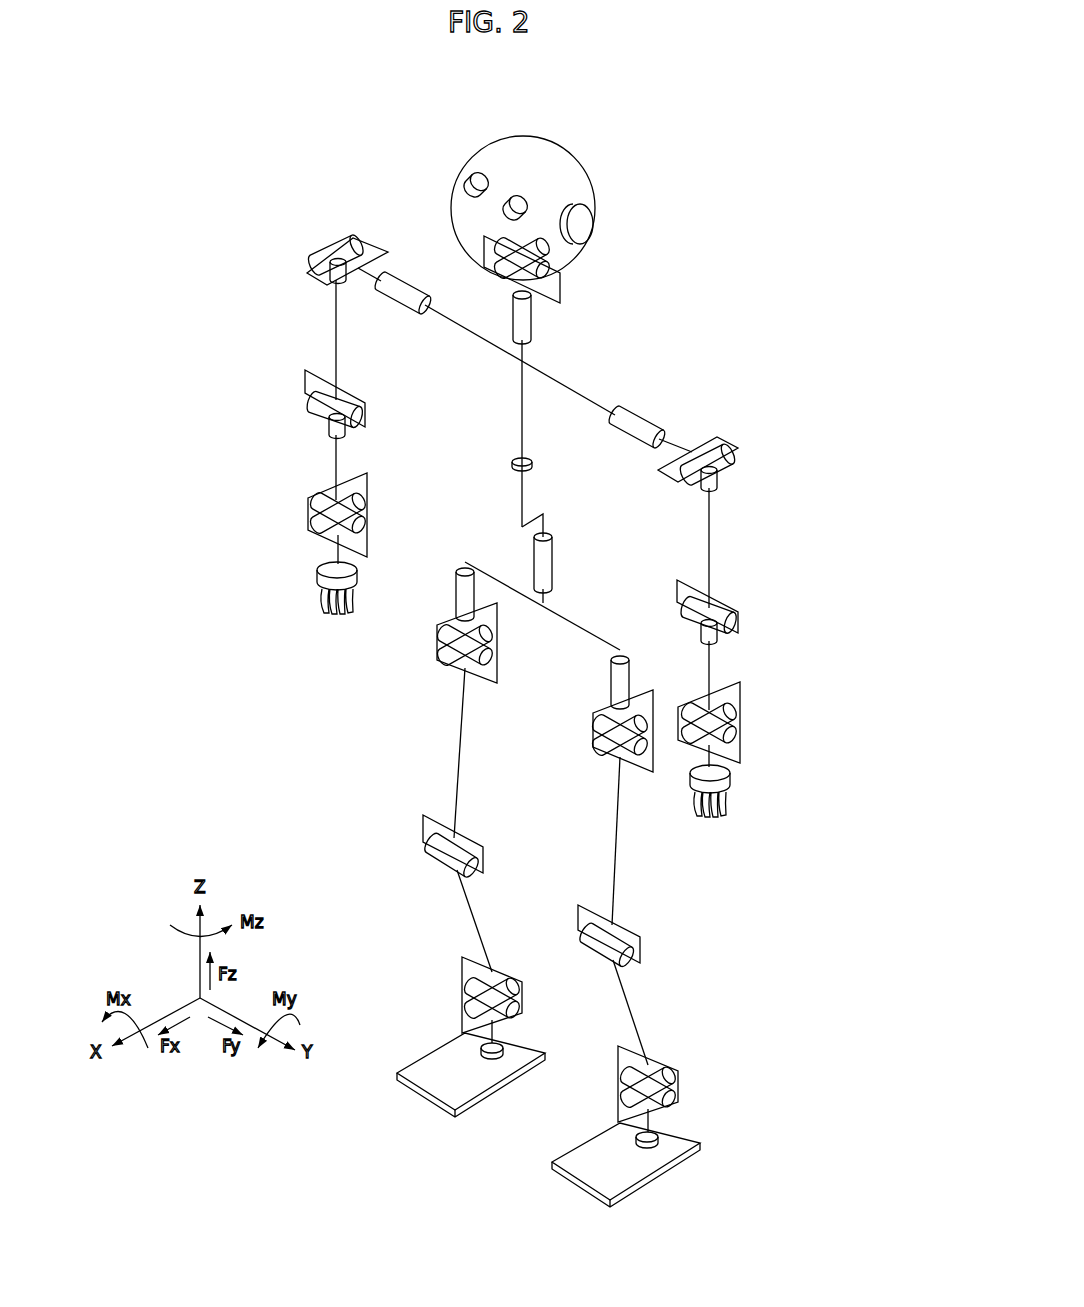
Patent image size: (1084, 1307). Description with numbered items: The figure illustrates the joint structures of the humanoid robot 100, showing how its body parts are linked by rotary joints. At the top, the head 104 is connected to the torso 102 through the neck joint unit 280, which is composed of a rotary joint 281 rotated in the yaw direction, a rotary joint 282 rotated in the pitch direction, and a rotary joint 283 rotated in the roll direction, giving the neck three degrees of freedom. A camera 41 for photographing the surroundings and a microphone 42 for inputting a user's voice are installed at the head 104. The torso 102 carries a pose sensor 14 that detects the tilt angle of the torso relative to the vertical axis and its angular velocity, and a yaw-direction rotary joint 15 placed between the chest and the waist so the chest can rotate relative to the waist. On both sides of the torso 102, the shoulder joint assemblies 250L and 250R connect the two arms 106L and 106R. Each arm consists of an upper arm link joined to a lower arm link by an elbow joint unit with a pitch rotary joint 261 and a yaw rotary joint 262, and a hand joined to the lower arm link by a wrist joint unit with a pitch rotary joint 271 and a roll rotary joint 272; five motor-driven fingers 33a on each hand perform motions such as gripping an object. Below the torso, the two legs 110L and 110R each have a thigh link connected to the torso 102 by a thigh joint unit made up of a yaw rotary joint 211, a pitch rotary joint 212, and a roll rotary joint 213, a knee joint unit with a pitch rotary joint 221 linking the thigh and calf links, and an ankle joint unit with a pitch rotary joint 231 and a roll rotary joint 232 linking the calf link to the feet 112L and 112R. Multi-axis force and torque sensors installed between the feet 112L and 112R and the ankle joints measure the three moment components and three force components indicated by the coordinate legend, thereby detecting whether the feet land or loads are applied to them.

The robot 100 is at (823, 155).
The torso 102 is at (520, 435).
The head 104 is at (592, 158).
The right arm 106R is at (228, 393).
The left arm 106L is at (795, 592).
The right leg 110R is at (365, 796).
The left leg 110L is at (676, 882).
The right foot 112R is at (418, 1103).
The left foot 112L is at (570, 1185).
The pose sensor 14 is at (532, 466).
The rotary joint 15 is at (553, 560).
The fingers 33a is at (330, 603).
The camera 41 is at (508, 208).
The microphone 42 is at (585, 225).
The rotary joint 211 is at (458, 590).
The rotary joint 212 is at (490, 648).
The rotary joint 213 is at (452, 668).
The rotary joint 221 is at (458, 848).
The rotary joint 231 is at (518, 1010).
The rotary joint 232 is at (500, 985).
The right shoulder joint assembly 250R is at (336, 232).
The left shoulder joint assembly 250L is at (678, 392).
The rotary joint 261 is at (343, 403).
The rotary joint 262 is at (347, 428).
The rotary joint 271 is at (362, 520).
The rotary joint 272 is at (362, 505).
The neck joint unit 280 is at (590, 298).
The rotary joint 281 is at (528, 320).
The rotary joint 282 is at (550, 268).
The rotary joint 283 is at (487, 268).